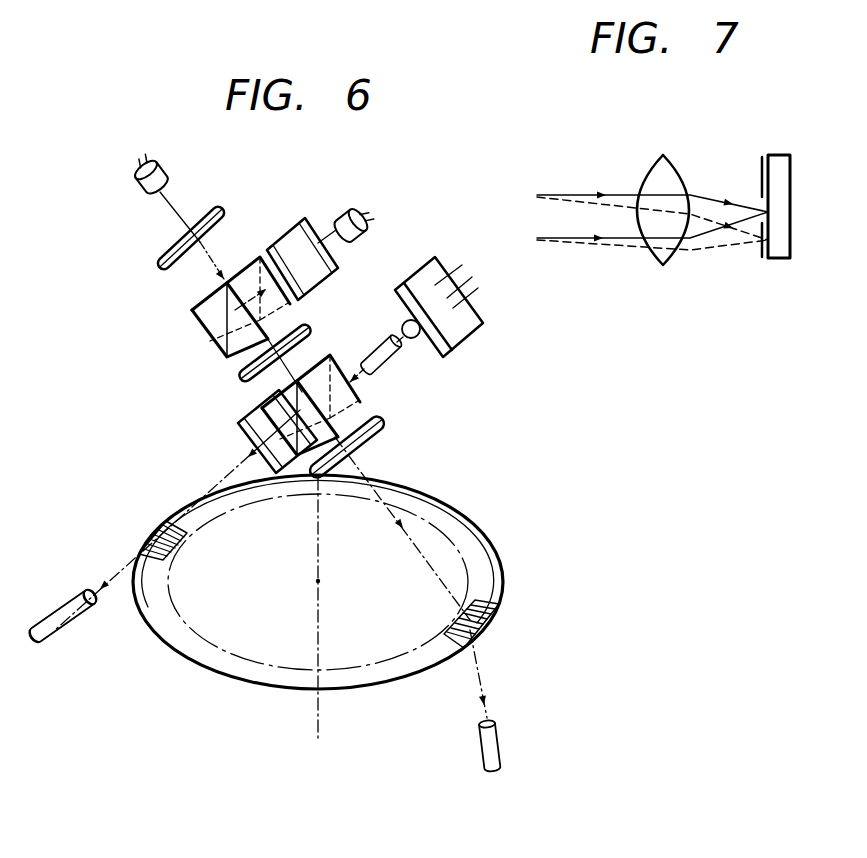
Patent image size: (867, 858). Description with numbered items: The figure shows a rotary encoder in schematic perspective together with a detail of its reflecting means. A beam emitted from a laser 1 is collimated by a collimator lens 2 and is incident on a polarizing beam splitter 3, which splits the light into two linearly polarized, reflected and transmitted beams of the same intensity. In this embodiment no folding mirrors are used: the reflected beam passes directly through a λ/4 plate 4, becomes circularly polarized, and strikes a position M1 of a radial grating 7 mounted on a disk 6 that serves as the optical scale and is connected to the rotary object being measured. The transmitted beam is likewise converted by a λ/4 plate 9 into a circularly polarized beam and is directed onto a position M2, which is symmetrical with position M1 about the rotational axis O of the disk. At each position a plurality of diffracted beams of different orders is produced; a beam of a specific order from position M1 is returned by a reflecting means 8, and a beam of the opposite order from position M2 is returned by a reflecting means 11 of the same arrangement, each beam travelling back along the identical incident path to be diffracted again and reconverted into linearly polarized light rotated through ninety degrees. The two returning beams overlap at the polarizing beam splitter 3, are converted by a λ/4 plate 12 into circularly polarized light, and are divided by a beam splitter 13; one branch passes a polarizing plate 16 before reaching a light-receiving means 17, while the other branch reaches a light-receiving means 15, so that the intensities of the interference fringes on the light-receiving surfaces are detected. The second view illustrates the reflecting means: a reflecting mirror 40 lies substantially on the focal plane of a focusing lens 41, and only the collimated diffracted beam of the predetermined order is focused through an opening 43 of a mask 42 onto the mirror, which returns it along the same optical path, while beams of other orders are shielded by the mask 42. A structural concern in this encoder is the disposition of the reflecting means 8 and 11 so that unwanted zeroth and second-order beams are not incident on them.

In FIG. 6, the laser 1 is at (468, 337).
In FIG. 6, the collimator lens 2 is at (390, 357).
In FIG. 6, the polarizing beam splitter 3 is at (363, 393).
In FIG. 6, the λ/4 plate 4 is at (380, 427).
In FIG. 6, the disk 6 is at (440, 542).
In FIG. 6, the radial grating 7 is at (497, 582).
In FIG. 6, the reflecting means 8 is at (499, 746).
In FIG. 6, the λ/4 plate 9 is at (245, 440).
In FIG. 6, the reflecting means 11 is at (68, 623).
In FIG. 6, the λ/4 plate 12 is at (240, 378).
In FIG. 6, the beam splitter 13 is at (224, 212).
In FIG. 6, the light-receiving means 15 is at (162, 173).
In FIG. 6, the polarizing plate 16 is at (297, 236).
In FIG. 6, the light-receiving means 17 is at (358, 208).
In FIG. 6, the rotational axis O is at (320, 580).
In FIG. 6, the position M1 is at (500, 605).
In FIG. 6, the position M2 is at (177, 532).
In FIG. 7, the reflecting mirror 40 is at (790, 157).
In FIG. 7, the focusing lens 41 is at (668, 163).
In FIG. 7, the mask 42 is at (762, 257).
In FIG. 7, the opening 43 is at (761, 186).